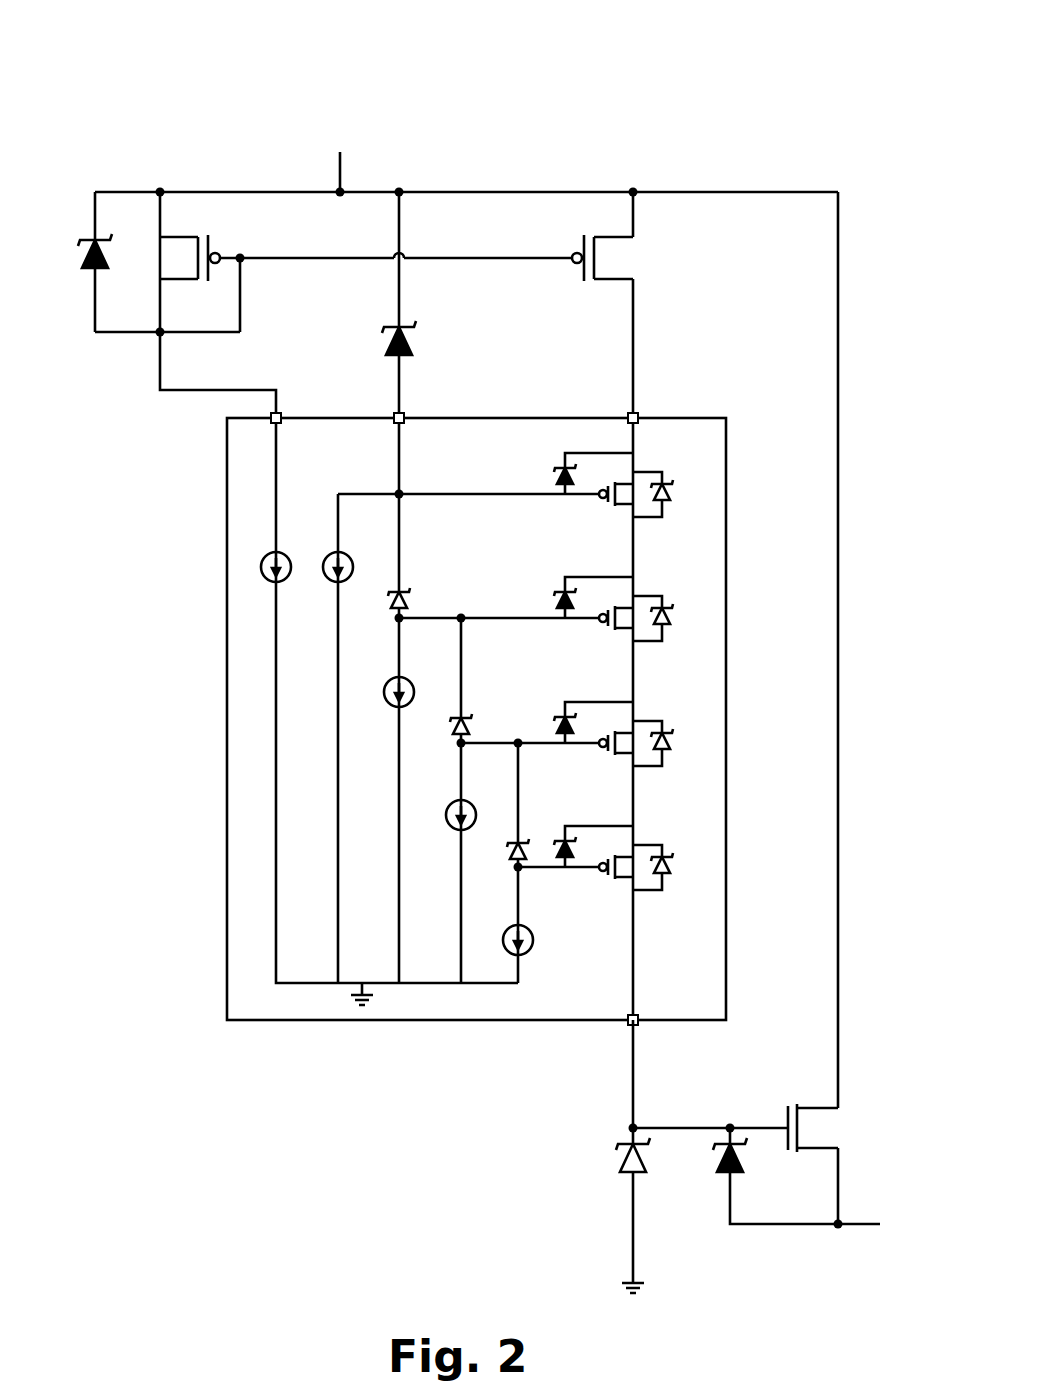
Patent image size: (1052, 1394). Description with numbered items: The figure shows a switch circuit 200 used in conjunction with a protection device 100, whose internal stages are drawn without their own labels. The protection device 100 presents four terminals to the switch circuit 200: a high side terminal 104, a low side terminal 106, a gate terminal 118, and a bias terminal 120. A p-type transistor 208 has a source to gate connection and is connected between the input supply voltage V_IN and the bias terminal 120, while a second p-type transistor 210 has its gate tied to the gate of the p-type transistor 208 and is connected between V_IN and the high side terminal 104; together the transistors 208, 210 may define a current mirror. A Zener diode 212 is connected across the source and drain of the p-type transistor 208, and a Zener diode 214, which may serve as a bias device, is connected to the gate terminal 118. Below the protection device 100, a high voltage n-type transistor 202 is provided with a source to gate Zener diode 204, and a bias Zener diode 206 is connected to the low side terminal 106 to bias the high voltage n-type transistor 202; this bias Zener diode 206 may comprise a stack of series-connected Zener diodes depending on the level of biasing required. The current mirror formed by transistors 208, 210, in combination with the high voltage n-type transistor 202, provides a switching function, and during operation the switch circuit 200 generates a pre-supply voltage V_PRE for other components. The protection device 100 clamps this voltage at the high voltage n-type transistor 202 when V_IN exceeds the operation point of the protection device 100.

The switch circuit 200 is at (108, 80).
The protection device 100 is at (712, 418).
The high side terminal 104 is at (636, 422).
The low side terminal 106 is at (637, 1016).
The gate terminal 118 is at (403, 422).
The bias terminal 120 is at (279, 422).
The high voltage n-type transistor 202 is at (786, 1110).
The source to gate Zener diode 204 is at (727, 1172).
The bias Zener diode 206 is at (622, 1160).
The p-type transistor 208 is at (211, 240).
The p-type transistor 210 is at (579, 274).
The Zener diode 212 is at (90, 268).
The Zener diode 214 is at (384, 330).